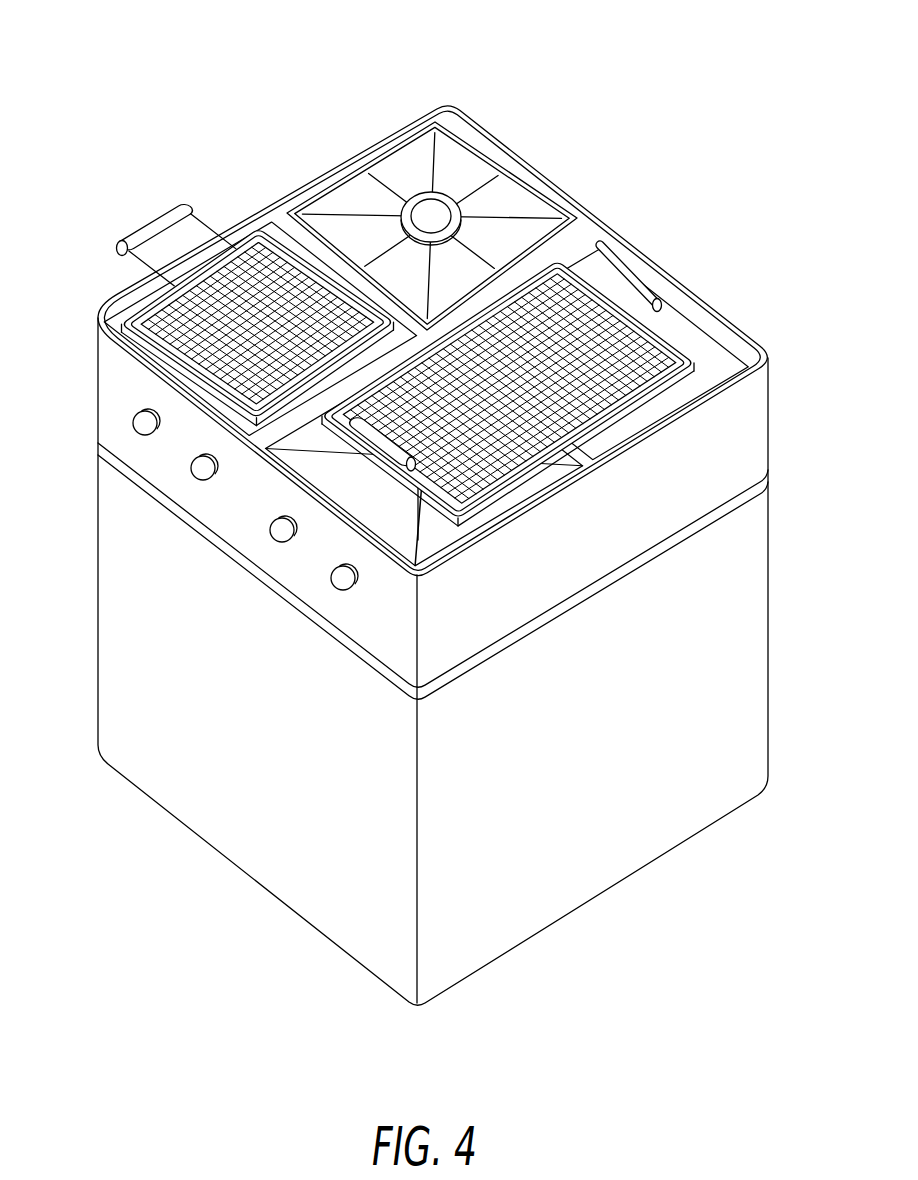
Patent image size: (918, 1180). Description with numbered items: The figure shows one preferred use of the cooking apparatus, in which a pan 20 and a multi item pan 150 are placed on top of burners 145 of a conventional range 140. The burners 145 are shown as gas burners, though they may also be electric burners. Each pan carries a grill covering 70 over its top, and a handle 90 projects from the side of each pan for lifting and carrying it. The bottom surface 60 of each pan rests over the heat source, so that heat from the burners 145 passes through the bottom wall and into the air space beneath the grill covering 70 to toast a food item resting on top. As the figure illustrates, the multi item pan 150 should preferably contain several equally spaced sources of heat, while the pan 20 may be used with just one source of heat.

The pan 20 is at (223, 233).
The bottom surface 60 is at (272, 417).
The grill covering 70 is at (257, 248).
The handle 90 is at (143, 222).
The conventional range 140 is at (610, 815).
The burners 145 is at (447, 168).
The multi item pan 150 is at (697, 368).